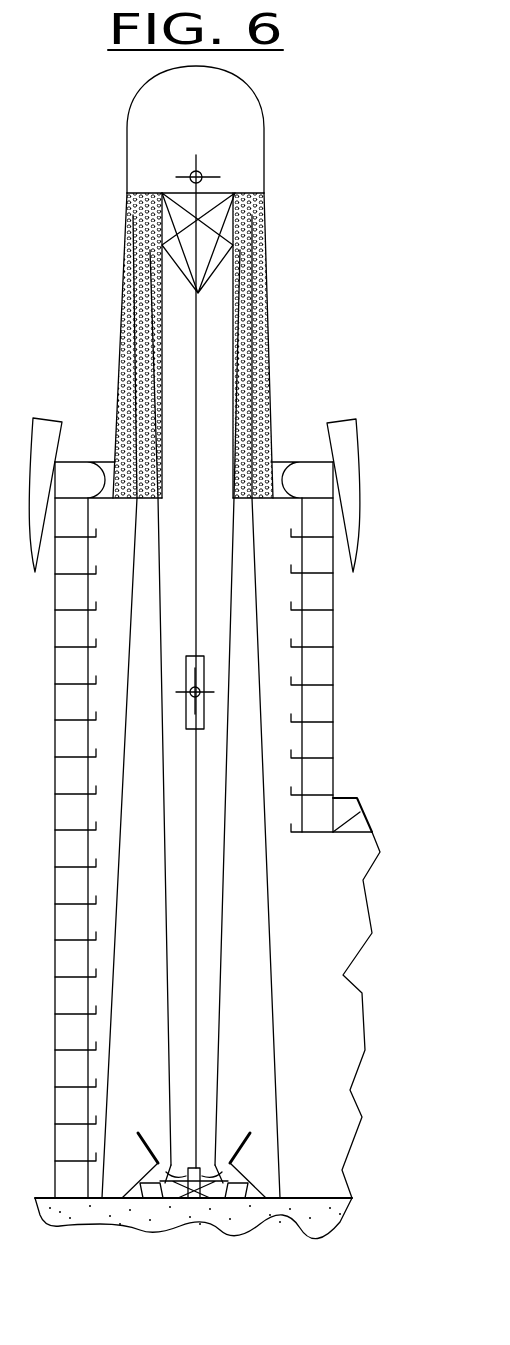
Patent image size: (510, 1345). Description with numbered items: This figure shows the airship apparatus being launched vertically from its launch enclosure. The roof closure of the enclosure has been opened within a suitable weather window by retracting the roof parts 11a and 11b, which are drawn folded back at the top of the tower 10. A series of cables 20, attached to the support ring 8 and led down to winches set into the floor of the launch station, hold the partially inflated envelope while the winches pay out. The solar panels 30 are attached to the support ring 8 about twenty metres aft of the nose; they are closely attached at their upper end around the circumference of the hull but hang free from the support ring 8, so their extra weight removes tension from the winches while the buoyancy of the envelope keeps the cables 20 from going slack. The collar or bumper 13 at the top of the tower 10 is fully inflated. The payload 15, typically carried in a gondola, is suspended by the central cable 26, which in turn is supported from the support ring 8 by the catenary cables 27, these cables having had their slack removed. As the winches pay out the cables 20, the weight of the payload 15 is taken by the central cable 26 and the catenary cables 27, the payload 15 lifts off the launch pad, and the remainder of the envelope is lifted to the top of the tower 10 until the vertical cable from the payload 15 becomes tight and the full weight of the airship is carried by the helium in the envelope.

The support ring 8 is at (237, 191).
The catenary cables 27 is at (225, 226).
The solar panels 30 is at (262, 342).
The central cable 26 is at (200, 378).
The roof part 11a is at (53, 424).
The roof part 11b is at (357, 436).
The collar or bumper 13 is at (308, 477).
The tower 10 is at (283, 589).
The payload 15 is at (204, 668).
The cables 20 is at (268, 888).